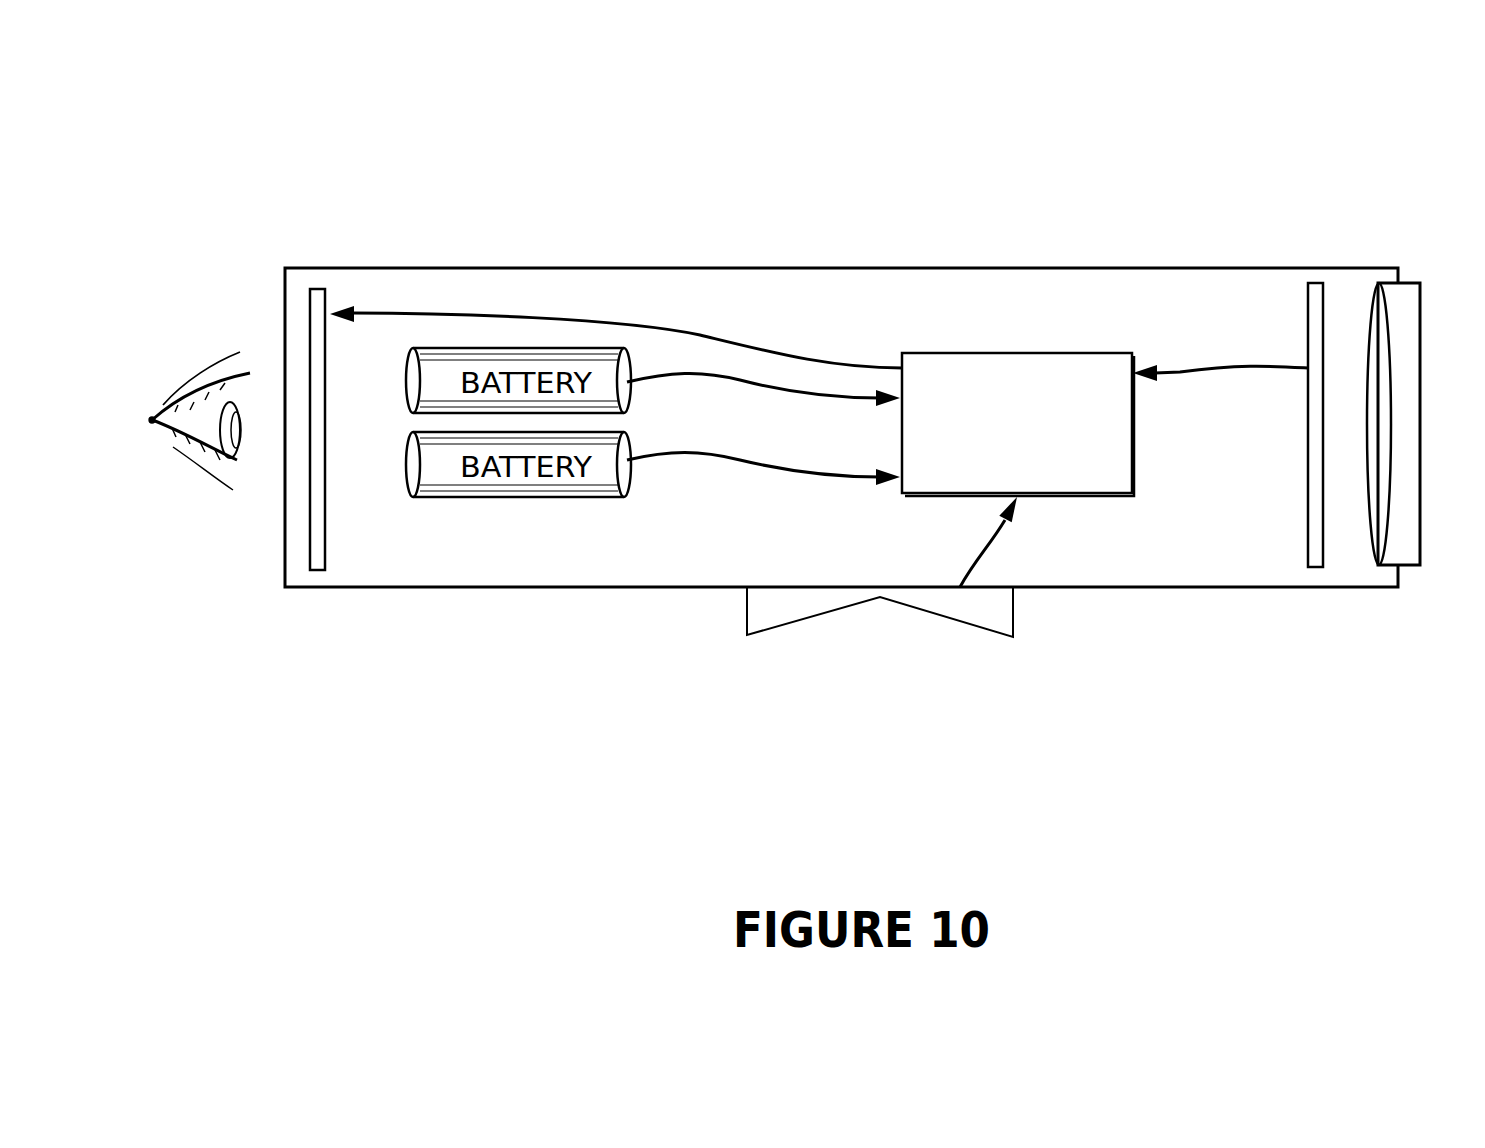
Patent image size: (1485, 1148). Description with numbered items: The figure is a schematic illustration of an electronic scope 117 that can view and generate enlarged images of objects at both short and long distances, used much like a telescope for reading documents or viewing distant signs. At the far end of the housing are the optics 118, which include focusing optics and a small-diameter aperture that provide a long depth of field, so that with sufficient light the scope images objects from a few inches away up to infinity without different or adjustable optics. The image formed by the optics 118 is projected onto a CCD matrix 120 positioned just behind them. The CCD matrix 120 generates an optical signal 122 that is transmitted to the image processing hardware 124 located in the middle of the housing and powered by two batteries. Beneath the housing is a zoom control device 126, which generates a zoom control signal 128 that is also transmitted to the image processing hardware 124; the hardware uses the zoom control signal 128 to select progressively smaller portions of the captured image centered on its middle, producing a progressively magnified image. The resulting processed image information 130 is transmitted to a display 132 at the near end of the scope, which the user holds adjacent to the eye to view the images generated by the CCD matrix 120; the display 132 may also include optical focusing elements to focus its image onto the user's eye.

The electronic scope 117 is at (722, 205).
The optics 118 is at (1420, 553).
The CCD matrix 120 is at (1313, 527).
The optical signal 122 is at (1217, 368).
The image processing hardware 124 is at (1062, 353).
The zoom control device 126 is at (768, 630).
The zoom control signal 128 is at (980, 558).
The processed image information 130 is at (375, 313).
The display 132 is at (325, 511).